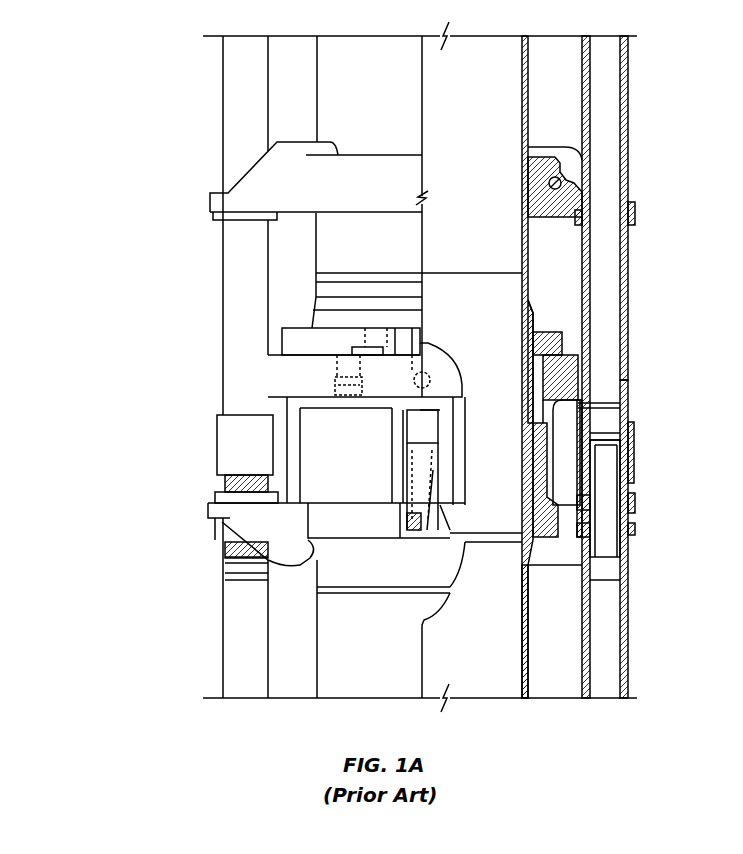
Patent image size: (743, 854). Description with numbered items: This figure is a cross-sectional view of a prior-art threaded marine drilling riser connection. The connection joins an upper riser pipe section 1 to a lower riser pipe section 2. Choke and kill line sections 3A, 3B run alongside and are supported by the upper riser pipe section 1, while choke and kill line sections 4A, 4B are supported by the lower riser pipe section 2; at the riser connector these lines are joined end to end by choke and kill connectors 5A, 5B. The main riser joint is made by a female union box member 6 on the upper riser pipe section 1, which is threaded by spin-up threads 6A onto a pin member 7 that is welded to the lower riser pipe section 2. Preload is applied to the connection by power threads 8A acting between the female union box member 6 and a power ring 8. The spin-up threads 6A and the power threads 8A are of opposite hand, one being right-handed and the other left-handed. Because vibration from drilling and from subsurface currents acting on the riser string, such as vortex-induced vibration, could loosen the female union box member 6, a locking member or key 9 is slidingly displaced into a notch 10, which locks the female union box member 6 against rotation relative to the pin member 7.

The upper riser pipe section 1 is at (522, 80).
The lower riser pipe section 2 is at (522, 660).
The choke and kill line section 3A is at (223, 112).
The choke and kill line section 3B is at (628, 100).
The choke and kill line section 4A is at (223, 640).
The choke and kill line section 4B is at (628, 632).
The choke and kill connector 5A is at (226, 485).
The choke and kill connector 5B is at (635, 488).
The female union box member 6 is at (570, 378).
The spin-up threads 6A is at (592, 425).
The pin member 7 is at (545, 540).
The power ring 8 is at (553, 345).
The power threads 8A is at (540, 378).
The locking member or key 9 is at (413, 465).
The notch 10 is at (413, 532).